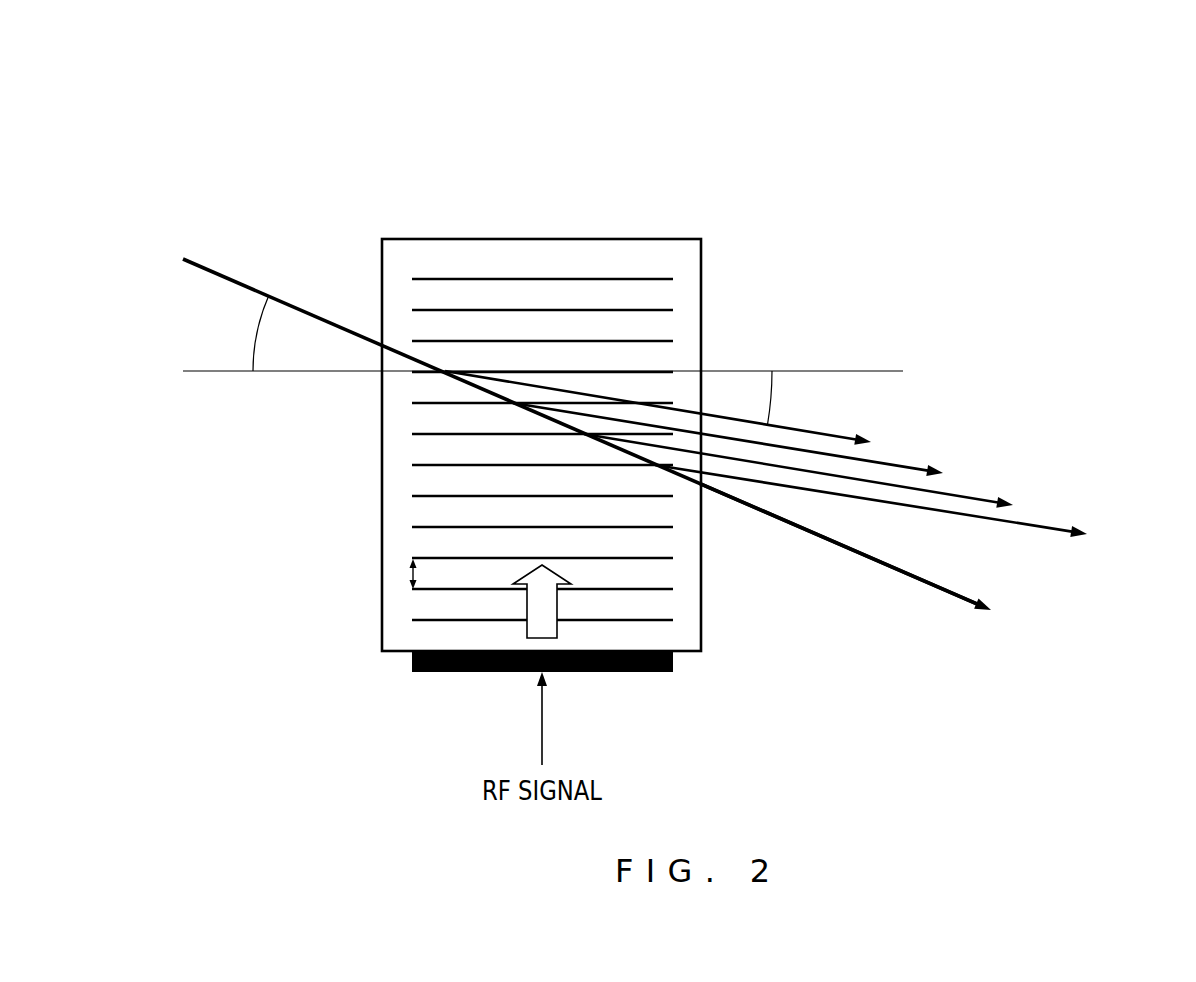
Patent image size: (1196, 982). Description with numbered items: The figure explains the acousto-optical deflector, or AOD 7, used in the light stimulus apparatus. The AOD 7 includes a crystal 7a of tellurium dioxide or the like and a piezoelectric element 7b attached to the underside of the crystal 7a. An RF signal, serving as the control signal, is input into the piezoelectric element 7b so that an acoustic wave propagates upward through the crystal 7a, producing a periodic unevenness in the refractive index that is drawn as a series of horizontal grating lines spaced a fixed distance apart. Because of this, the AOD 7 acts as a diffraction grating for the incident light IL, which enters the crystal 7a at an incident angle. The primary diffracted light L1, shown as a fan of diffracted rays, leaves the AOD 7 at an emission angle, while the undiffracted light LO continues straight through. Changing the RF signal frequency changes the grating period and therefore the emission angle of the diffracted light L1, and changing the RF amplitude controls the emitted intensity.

The AOD 7 is at (1150, 72).
The crystal 7a is at (505, 257).
The piezoelectric element 7b is at (445, 655).
The incident light IL is at (223, 275).
The zero-order light LO is at (835, 545).
The primary diffracted light L1 is at (1095, 422).